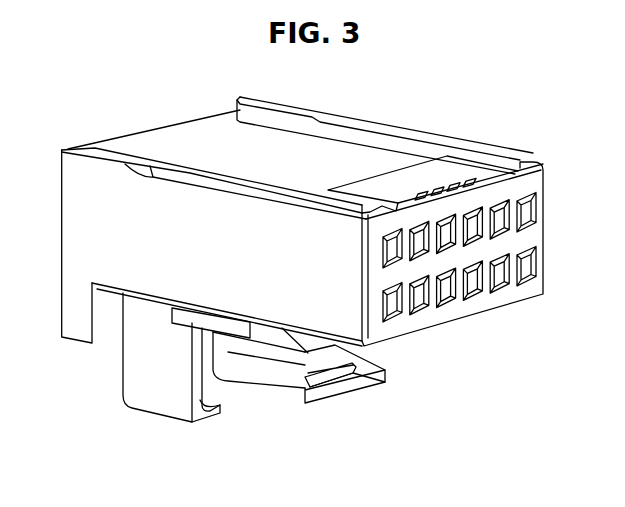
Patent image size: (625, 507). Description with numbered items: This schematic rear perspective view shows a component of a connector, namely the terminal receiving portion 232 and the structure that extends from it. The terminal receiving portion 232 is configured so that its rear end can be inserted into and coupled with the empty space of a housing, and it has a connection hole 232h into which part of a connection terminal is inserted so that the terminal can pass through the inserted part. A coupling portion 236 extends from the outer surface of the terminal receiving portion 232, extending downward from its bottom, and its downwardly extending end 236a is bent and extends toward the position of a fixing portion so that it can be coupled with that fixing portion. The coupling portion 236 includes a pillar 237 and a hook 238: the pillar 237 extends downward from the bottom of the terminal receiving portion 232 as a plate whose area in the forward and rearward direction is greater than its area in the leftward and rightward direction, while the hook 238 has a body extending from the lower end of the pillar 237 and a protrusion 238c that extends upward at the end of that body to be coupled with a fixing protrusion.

The terminal receiving portion 232 is at (57, 194).
The connection hole 232h is at (521, 212).
The coupling portion 236 is at (283, 382).
The end 236a is at (358, 385).
The pillar 237 is at (228, 342).
The hook 238 is at (349, 400).
The protrusion 238c is at (352, 359).